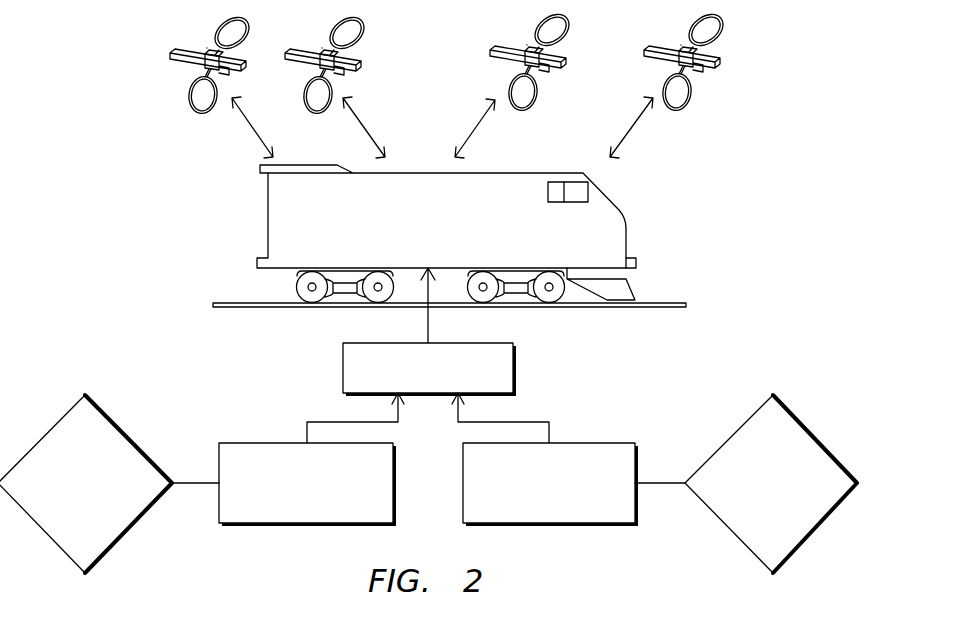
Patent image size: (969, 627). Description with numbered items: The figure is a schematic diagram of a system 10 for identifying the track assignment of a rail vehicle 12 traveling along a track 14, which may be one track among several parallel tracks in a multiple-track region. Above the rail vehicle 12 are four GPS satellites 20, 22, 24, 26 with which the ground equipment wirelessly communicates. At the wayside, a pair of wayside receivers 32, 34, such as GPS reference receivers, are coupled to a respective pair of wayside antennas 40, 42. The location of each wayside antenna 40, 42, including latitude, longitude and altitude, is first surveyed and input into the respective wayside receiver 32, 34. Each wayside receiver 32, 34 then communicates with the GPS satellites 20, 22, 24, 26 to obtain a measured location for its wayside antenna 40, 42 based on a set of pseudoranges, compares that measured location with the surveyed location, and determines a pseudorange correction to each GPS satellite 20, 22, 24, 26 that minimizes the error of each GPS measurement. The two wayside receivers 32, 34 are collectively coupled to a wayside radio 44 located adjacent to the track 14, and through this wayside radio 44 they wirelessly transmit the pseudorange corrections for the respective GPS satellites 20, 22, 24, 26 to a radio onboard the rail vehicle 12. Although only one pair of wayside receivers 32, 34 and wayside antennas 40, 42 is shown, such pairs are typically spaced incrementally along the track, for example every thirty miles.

The system 10 is at (725, 157).
The rail vehicle 12 is at (605, 203).
The track 14 is at (662, 303).
The GPS satellite 20 is at (185, 73).
The GPS satellite 22 is at (357, 64).
The GPS satellite 24 is at (565, 63).
The GPS satellite 26 is at (705, 73).
The wayside receiver 32 is at (277, 441).
The wayside receiver 34 is at (592, 442).
The wayside antenna 40 is at (128, 436).
The wayside antenna 42 is at (820, 436).
The wayside radio 44 is at (516, 367).